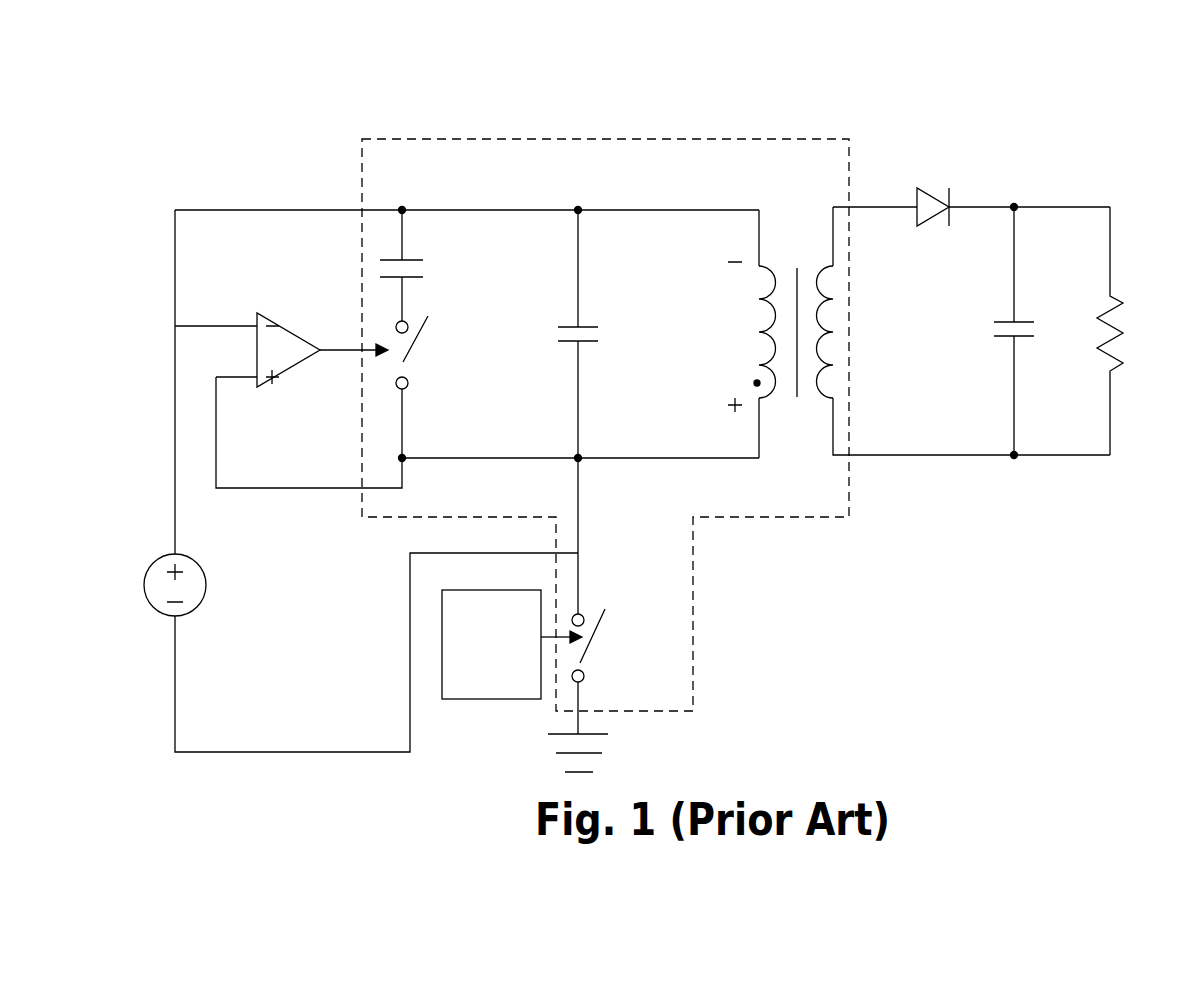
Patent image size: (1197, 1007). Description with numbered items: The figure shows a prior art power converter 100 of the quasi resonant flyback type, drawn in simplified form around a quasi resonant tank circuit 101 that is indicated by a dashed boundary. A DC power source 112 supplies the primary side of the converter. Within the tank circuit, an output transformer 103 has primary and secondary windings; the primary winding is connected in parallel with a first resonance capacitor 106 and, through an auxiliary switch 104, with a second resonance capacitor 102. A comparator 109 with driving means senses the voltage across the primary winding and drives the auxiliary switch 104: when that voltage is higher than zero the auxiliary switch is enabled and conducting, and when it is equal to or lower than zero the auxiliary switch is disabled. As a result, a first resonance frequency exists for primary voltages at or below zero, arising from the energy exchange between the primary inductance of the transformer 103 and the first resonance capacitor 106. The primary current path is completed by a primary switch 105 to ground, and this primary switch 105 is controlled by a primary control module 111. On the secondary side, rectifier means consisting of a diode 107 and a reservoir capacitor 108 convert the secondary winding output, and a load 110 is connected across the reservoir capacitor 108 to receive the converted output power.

The power converter 100 is at (1015, 93).
The quasi resonant tank circuit 101 is at (770, 139).
The second resonance capacitor 102 is at (423, 278).
The output transformer 103 is at (813, 258).
The auxiliary switch 104 is at (414, 341).
The primary switch 105 is at (592, 636).
The first resonance capacitor 106 is at (598, 341).
The diode 107 is at (917, 188).
The reservoir capacitor 108 is at (1006, 337).
The comparator 109 is at (290, 375).
The load resistor 110 is at (1122, 362).
The primary control module 111 is at (512, 644).
The DC power source 112 is at (190, 613).